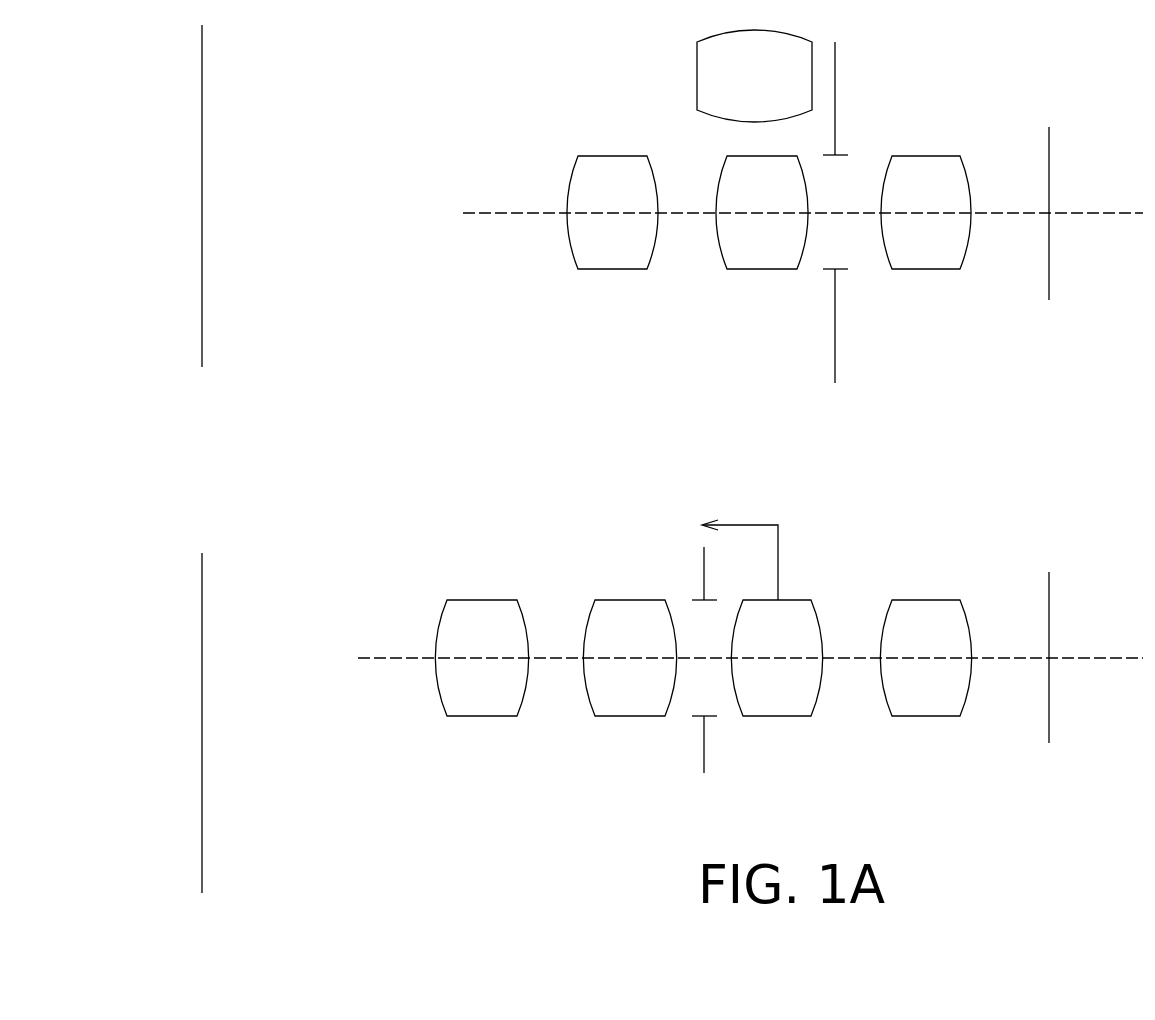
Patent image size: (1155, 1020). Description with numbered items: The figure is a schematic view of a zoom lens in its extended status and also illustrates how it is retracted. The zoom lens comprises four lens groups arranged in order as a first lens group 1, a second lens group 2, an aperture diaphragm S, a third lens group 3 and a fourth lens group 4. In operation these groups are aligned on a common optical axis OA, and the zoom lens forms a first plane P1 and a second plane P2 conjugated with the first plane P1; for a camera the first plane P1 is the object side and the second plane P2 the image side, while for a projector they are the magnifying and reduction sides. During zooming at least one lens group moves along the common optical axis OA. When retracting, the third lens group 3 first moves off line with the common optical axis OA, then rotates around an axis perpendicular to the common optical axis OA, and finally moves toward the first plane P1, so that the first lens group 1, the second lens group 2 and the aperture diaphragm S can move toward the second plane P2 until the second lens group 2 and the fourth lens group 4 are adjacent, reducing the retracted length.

The first lens group 1 is at (608, 270).
The second lens group 2 is at (757, 270).
The third lens group 3 is at (697, 70).
The fourth lens group 4 is at (925, 270).
The aperture diaphragm S is at (835, 391).
The first plane P1 is at (202, 328).
The second plane P2 is at (1049, 272).
The common optical axis OA is at (729, 442).